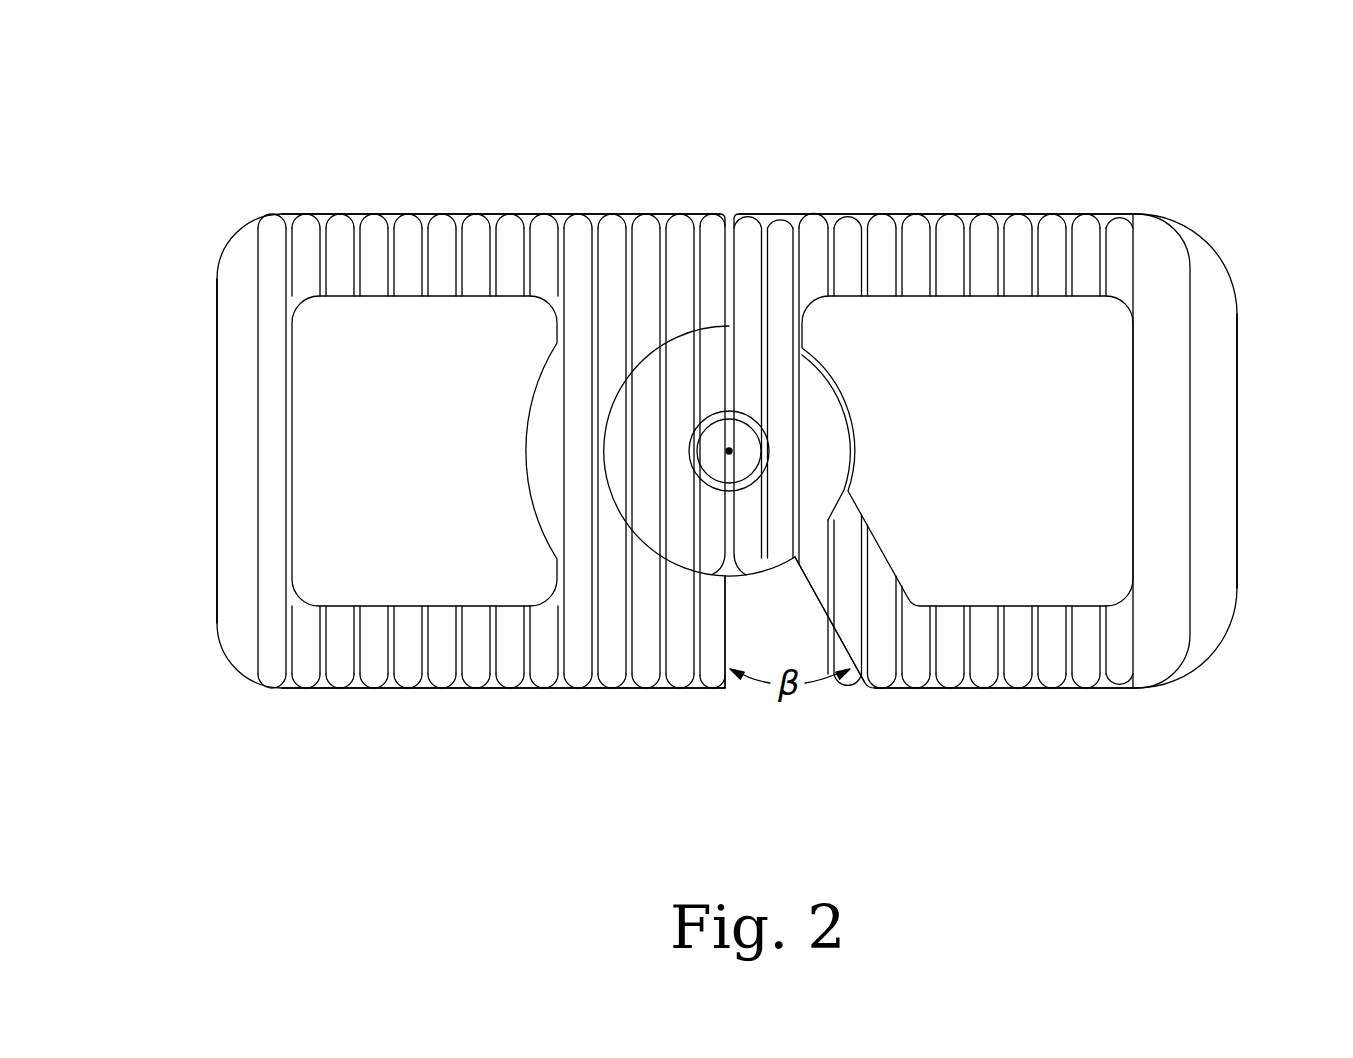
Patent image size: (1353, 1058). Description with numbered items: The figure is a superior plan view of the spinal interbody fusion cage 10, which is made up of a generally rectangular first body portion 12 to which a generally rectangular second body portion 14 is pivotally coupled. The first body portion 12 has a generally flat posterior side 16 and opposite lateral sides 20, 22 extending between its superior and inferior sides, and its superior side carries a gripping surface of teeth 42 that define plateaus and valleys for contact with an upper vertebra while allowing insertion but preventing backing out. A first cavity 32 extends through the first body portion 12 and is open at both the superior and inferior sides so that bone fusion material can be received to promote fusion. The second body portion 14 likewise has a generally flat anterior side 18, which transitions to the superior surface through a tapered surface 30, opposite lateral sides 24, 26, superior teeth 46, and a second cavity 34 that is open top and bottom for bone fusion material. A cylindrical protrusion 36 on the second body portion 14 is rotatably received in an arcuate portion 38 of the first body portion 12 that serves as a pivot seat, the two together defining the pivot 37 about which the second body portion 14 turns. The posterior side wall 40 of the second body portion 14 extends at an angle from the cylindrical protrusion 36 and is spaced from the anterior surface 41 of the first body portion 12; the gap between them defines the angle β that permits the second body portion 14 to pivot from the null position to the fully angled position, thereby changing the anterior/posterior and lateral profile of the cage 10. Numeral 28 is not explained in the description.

The spinal interbody fusion cage 10 is at (1192, 146).
The first body portion 12 is at (262, 700).
The second body portion 14 is at (1130, 698).
The posterior side 16 is at (213, 535).
The anterior side 18 is at (1243, 535).
The lateral side 20 is at (458, 688).
The lateral side 22 is at (467, 213).
The lateral side 24 is at (1015, 688).
The lateral side 26 is at (938, 212).
The first side wall 28 is at (232, 432).
The tapered surface 30 is at (1225, 432).
The first cavity 32 is at (333, 365).
The second cavity 34 is at (1110, 365).
The cylindrical protrusion 36 is at (825, 400).
The pivot 37 is at (732, 451).
The arcuate portion 38 is at (608, 450).
The posterior side wall 40 is at (865, 688).
The anterior surface 41 is at (727, 612).
The teeth 42 is at (505, 285).
The teeth 46 is at (883, 227).